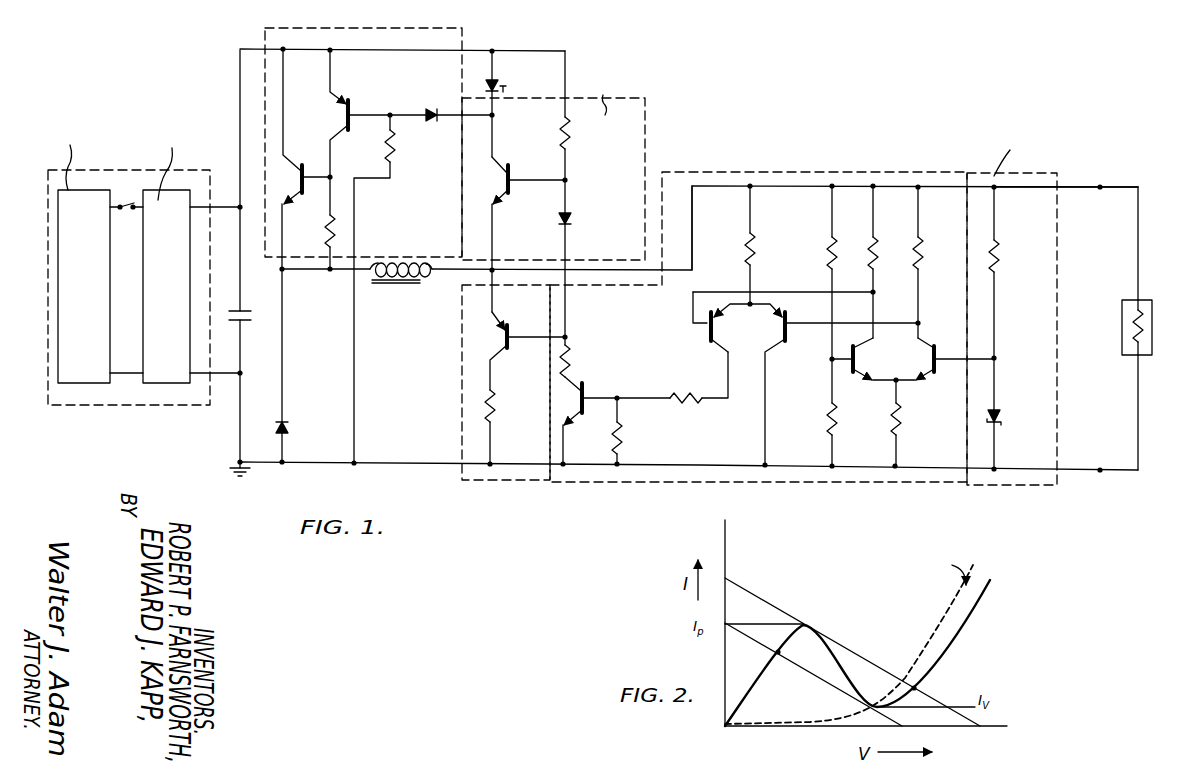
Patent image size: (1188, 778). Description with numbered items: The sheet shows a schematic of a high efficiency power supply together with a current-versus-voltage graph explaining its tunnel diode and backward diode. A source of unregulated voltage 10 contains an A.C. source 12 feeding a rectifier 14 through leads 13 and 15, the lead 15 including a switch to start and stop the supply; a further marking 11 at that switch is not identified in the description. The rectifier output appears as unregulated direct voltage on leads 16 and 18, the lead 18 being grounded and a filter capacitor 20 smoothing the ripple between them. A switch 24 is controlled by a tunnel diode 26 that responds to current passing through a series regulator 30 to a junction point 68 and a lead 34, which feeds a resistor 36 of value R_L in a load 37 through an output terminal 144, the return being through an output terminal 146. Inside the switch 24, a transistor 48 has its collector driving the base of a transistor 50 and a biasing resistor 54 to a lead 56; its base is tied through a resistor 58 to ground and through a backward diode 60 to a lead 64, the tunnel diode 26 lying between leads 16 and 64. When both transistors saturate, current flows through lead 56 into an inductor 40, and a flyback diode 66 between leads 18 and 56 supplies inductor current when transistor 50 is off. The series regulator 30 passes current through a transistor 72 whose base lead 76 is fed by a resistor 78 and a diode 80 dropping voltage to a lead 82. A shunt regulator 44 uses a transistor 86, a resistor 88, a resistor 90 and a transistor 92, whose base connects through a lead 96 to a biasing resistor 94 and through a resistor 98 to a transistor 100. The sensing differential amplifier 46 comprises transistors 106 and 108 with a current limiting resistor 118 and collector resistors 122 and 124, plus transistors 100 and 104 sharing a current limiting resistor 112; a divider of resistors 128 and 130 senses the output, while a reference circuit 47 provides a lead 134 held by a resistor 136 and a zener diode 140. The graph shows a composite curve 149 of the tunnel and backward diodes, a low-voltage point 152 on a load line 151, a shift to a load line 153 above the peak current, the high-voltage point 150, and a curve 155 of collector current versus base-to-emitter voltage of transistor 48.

In FIG. 1, the source of unregulated voltage 10 is at (117, 170).
In FIG. 1, the conductor 11 is at (125, 211).
In FIG. 1, the A.C. source 12 is at (78, 192).
In FIG. 1, the lead 13 is at (121, 372).
In FIG. 1, the rectifier 14 is at (166, 208).
In FIG. 1, the lead 15 is at (124, 200).
In FIG. 1, the lead 16 is at (240, 49).
In FIG. 1, the lead 18 is at (238, 448).
In FIG. 1, the filter capacitor 20 is at (246, 311).
In FIG. 1, the switch 24 is at (422, 37).
In FIG. 1, the tunnel diode 26 is at (497, 82).
In FIG. 1, the series regulator 30 is at (645, 125).
In FIG. 1, the lead 34 is at (716, 188).
In FIG. 1, the resistor 36 is at (1133, 326).
In FIG. 1, the load 37 is at (1125, 338).
In FIG. 1, the inductor 40 is at (396, 265).
In FIG. 1, the shunt regulator 44 is at (462, 472).
In FIG. 1, the sensing differential amplifier 46 is at (948, 173).
In FIG. 1, the reference circuit 47 is at (1031, 182).
In FIG. 1, the transistor 48 is at (352, 101).
In FIG. 1, the transistor 50 is at (304, 167).
In FIG. 1, the biasing resistor 54 is at (324, 226).
In FIG. 1, the lead 56 is at (297, 272).
In FIG. 1, the resistor 58 is at (398, 154).
In FIG. 1, the backward diode 60 is at (434, 108).
In FIG. 1, the lead 64 is at (495, 134).
In FIG. 1, the flyback diode 66 is at (289, 422).
In FIG. 1, the junction point 68 is at (495, 266).
In FIG. 1, the transistor 72 is at (510, 170).
In FIG. 1, the lead 76 is at (571, 174).
In FIG. 1, the resistor 78 is at (572, 143).
In FIG. 1, the diode 80 is at (572, 219).
In FIG. 1, the lead 82 is at (573, 252).
In FIG. 1, the transistor 86 is at (512, 331).
In FIG. 1, the resistor 88 is at (496, 411).
In FIG. 1, the resistor 90 is at (573, 362).
In FIG. 1, the transistor 92 is at (587, 392).
In FIG. 1, the biasing resistor 94 is at (612, 441).
In FIG. 1, the lead 96 is at (655, 397).
In FIG. 1, the resistor 98 is at (696, 394).
In FIG. 1, the transistor 100 is at (708, 333).
In FIG. 1, the transistor 104 is at (770, 327).
In FIG. 1, the transistor 106 is at (862, 362).
In FIG. 1, the transistor 108 is at (934, 361).
In FIG. 1, the current limiting resistor 112 is at (760, 250).
In FIG. 1, the current limiting resistor 118 is at (892, 430).
In FIG. 1, the resistor 122 is at (880, 244).
In FIG. 1, the resistor 124 is at (924, 252).
In FIG. 1, the resistor 128 is at (838, 244).
In FIG. 1, the resistor 130 is at (827, 422).
In FIG. 1, the lead 134 is at (997, 358).
In FIG. 1, the resistor 136 is at (1002, 264).
In FIG. 1, the zener diode 140 is at (1000, 413).
In FIG. 1, the output terminal 144 is at (1103, 186).
In FIG. 1, the output terminal 146 is at (1100, 472).
In FIG. 2, the curve 149 is at (784, 640).
In FIG. 2, the point 150 is at (919, 689).
In FIG. 2, the load line 151 is at (785, 670).
In FIG. 2, the point 152 is at (772, 656).
In FIG. 2, the load line 153 is at (826, 640).
In FIG. 2, the curve 155 is at (960, 605).